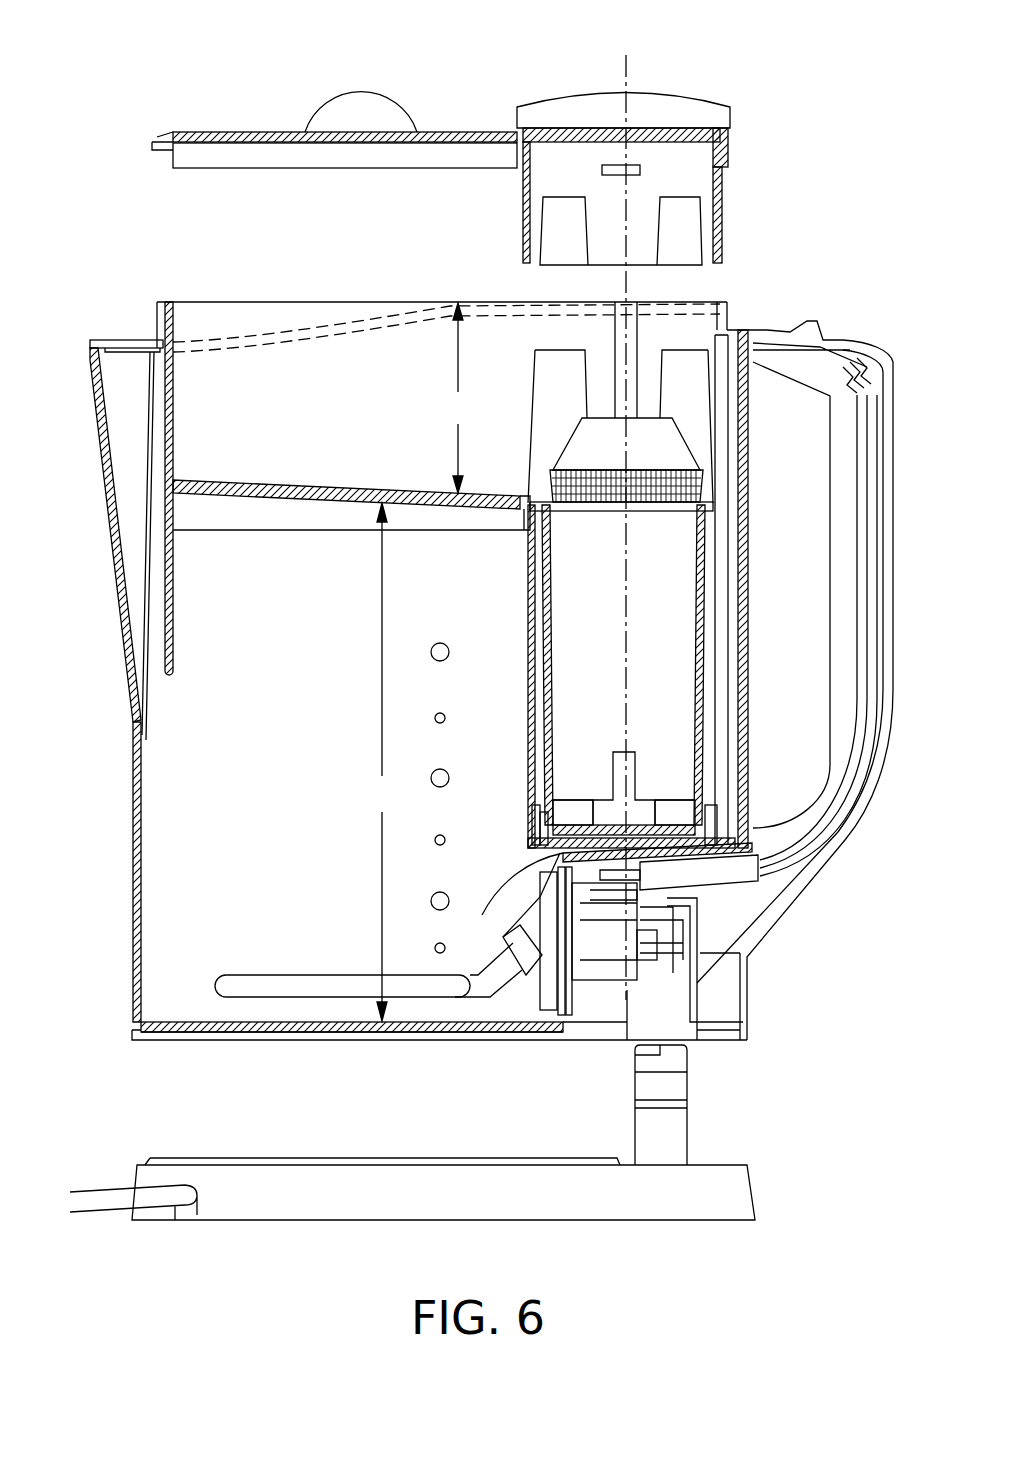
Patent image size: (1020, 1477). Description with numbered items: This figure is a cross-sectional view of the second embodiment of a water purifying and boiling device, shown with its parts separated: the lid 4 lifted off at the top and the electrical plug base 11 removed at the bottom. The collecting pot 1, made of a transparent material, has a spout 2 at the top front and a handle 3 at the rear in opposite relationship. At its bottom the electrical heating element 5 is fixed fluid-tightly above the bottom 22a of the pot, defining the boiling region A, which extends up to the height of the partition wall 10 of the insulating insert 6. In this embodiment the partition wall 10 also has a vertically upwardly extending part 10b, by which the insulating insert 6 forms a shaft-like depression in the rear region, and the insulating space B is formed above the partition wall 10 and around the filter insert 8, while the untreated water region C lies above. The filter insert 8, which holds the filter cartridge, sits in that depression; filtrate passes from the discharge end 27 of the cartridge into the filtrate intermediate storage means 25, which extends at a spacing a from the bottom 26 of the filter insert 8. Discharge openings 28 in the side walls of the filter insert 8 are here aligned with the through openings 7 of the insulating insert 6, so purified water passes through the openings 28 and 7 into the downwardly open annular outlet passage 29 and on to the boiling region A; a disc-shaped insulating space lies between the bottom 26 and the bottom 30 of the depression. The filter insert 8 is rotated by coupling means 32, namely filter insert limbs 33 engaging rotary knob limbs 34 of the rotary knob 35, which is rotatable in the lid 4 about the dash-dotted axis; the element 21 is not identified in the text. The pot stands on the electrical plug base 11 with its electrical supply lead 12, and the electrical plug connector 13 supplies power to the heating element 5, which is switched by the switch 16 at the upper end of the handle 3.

The collecting pot 1 is at (135, 793).
The spout 2 is at (108, 524).
The handle 3 is at (813, 914).
The lid 4 is at (248, 172).
The electrical heating element 5 is at (262, 985).
The insulating insert 6 is at (243, 505).
The through opening 7 is at (560, 816).
The filter insert 8 is at (728, 602).
The partition wall 10 is at (308, 486).
The vertically upwardly extending part of the partition wall 10b is at (528, 662).
The electrical plug base 11 is at (413, 1178).
The electrical supply lead 12 is at (104, 1195).
The electrical plug connector 13 is at (630, 1117).
The switch 16 is at (790, 332).
The knob 21 is at (385, 108).
The bottom of the collecting pot 22a is at (205, 1040).
The filtrate intermediate storage means 25 is at (700, 792).
The bottom of the filter insert 26 is at (560, 850).
The discharge end of the filter cartridge 27 is at (556, 780).
The discharge opening 28 is at (702, 810).
The annular outlet passage 29 is at (540, 842).
The bottom of the shaft-like depression 30 is at (586, 872).
The coupling means 32 is at (538, 350).
The filter insert limbs 33 is at (690, 376).
The rotary knob limbs 34 is at (648, 245).
The rotary knob 35 is at (688, 115).
The boiling region A is at (381, 762).
The insulating space B is at (530, 630).
The untreated water region C is at (446, 398).
The spacing a is at (602, 813).